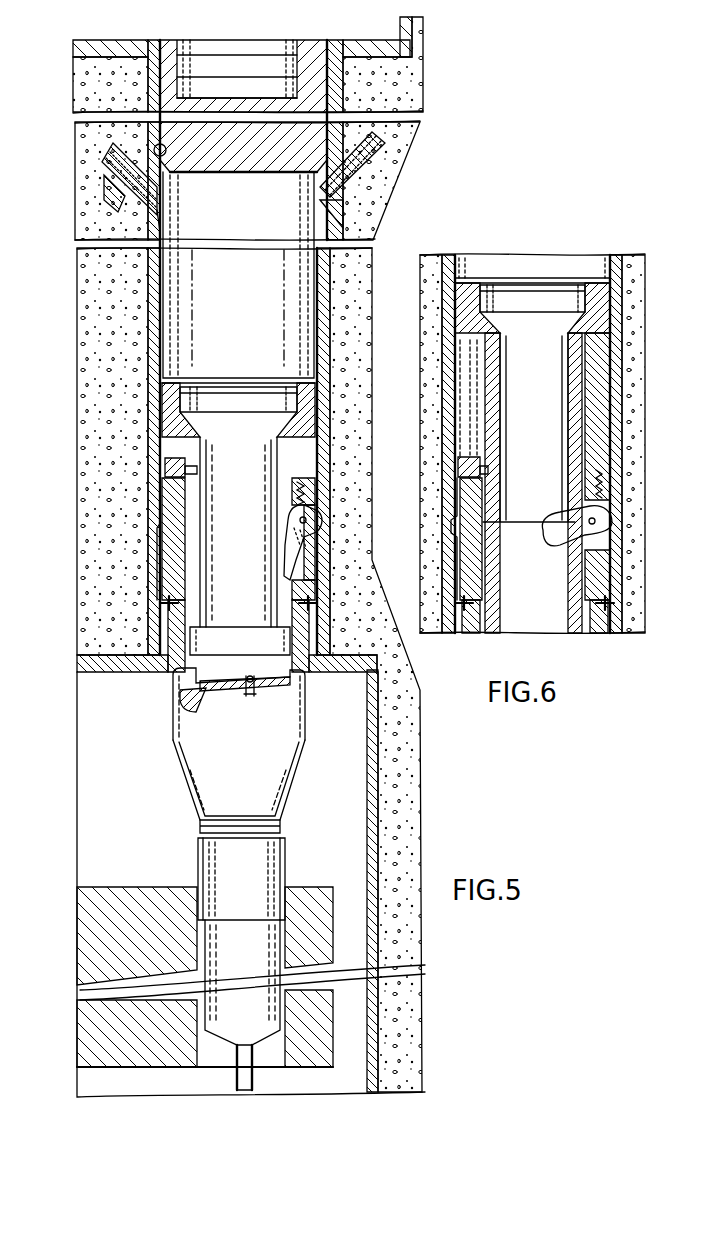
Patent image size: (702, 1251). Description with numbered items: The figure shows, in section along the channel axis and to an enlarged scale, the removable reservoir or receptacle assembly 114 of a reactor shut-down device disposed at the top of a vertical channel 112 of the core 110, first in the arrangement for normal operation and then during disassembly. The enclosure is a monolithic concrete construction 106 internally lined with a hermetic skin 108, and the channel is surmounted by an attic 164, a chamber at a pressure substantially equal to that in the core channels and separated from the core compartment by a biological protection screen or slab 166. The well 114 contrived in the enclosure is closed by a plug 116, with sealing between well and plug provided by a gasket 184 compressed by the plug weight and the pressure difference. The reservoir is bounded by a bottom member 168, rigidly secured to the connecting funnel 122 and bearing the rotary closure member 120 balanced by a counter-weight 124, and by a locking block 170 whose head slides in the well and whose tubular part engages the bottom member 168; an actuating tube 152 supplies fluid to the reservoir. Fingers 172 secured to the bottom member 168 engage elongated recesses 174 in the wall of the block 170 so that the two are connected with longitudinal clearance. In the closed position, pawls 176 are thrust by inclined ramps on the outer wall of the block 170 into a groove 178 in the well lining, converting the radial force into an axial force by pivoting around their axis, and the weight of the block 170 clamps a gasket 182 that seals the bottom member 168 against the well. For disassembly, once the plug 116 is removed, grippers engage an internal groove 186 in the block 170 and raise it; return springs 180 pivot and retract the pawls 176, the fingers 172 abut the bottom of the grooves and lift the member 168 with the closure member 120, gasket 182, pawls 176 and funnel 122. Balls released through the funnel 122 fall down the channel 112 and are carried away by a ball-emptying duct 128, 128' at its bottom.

In FIG. 5, the monolithic concrete construction 106 is at (405, 808).
In FIG. 5, the hermetic skin 108 is at (373, 836).
In FIG. 5, the core 110 is at (152, 949).
In FIG. 5, the vertical channel 112 is at (253, 954).
In FIG. 5, the well 114 is at (156, 284).
In FIG. 5, the plug 116 is at (200, 60).
In FIG. 5, the closure member 120 is at (278, 688).
In FIG. 5, the connecting funnel 122 is at (251, 786).
In FIG. 5, the counter-weight 124 is at (197, 702).
In FIG. 5, the ball-emptying duct 128 is at (73, 185).
In FIG. 5, the ball-emptying duct 128' is at (221, 1070).
In FIG. 5, the actuating tube 152 is at (375, 150).
In FIG. 5, the attic 164 is at (126, 26).
In FIG. 5, the biological protection screen or slab 166 is at (123, 326).
In FIG. 5, the bottom member 168 is at (178, 494).
In FIG. 5, the locking block 170 is at (172, 426).
In FIG. 6, the locking block 170 is at (554, 416).
In FIG. 5, the fingers 172 is at (176, 471).
In FIG. 6, the fingers 172 is at (473, 467).
In FIG. 5, the elongated recesses 174 is at (194, 548).
In FIG. 5, the pawls 176 is at (316, 540).
In FIG. 6, the pawls 176 is at (572, 547).
In FIG. 6, the groove 178 is at (478, 530).
In FIG. 5, the return springs 180 is at (303, 503).
In FIG. 5, the gasket 182 is at (165, 610).
In FIG. 5, the gasket 184 is at (156, 150).
In FIG. 5, the internal groove 186 is at (182, 400).